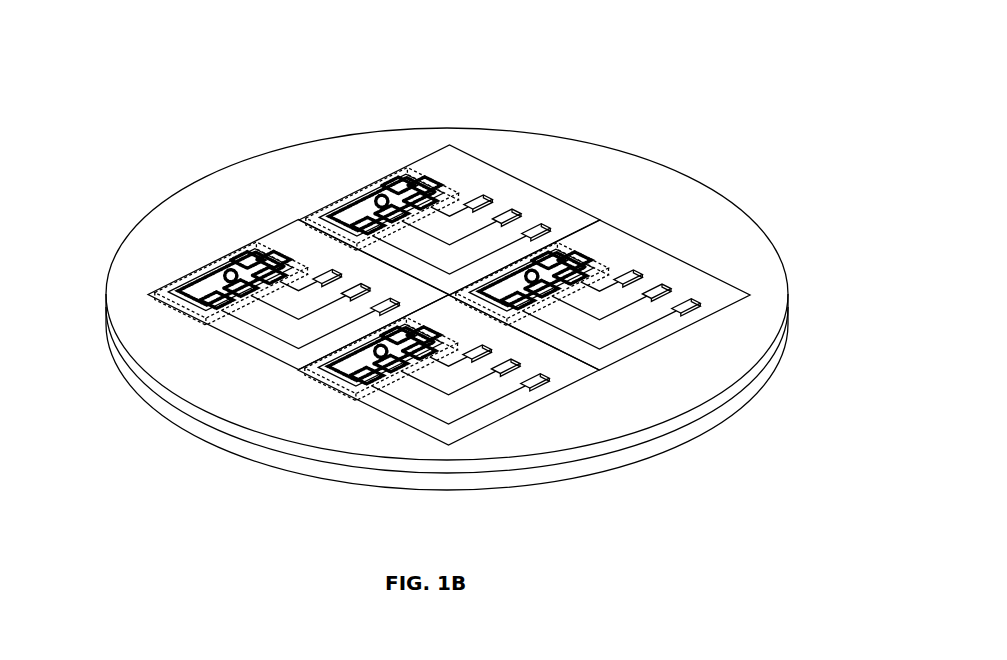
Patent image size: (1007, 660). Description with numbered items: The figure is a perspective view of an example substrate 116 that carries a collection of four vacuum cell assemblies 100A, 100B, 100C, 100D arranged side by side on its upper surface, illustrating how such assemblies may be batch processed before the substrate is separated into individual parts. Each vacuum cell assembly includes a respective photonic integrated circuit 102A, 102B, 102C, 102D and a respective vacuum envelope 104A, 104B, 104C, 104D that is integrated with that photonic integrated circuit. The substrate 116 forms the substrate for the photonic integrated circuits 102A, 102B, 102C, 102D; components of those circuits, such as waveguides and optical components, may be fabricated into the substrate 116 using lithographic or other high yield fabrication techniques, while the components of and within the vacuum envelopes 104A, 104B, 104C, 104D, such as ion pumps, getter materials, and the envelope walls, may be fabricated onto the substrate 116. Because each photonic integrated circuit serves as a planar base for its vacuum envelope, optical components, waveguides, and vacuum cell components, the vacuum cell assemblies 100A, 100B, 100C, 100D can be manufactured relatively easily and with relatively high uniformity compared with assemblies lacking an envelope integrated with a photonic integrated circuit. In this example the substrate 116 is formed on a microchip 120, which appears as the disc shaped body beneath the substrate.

The substrate 116 is at (128, 272).
The microchip 120 is at (680, 447).
The vacuum cell assembly 100A is at (272, 182).
The vacuum cell assembly 100B is at (430, 118).
The vacuum cell assembly 100C is at (546, 436).
The vacuum cell assembly 100D is at (700, 362).
The photonic integrated circuit 102A is at (273, 231).
The photonic integrated circuit 102B is at (393, 174).
The photonic integrated circuit 102C is at (367, 404).
The photonic integrated circuit 102D is at (665, 250).
The vacuum envelope 104A is at (228, 250).
The vacuum envelope 104B is at (363, 183).
The vacuum envelope 104C is at (315, 371).
The vacuum envelope 104D is at (582, 258).